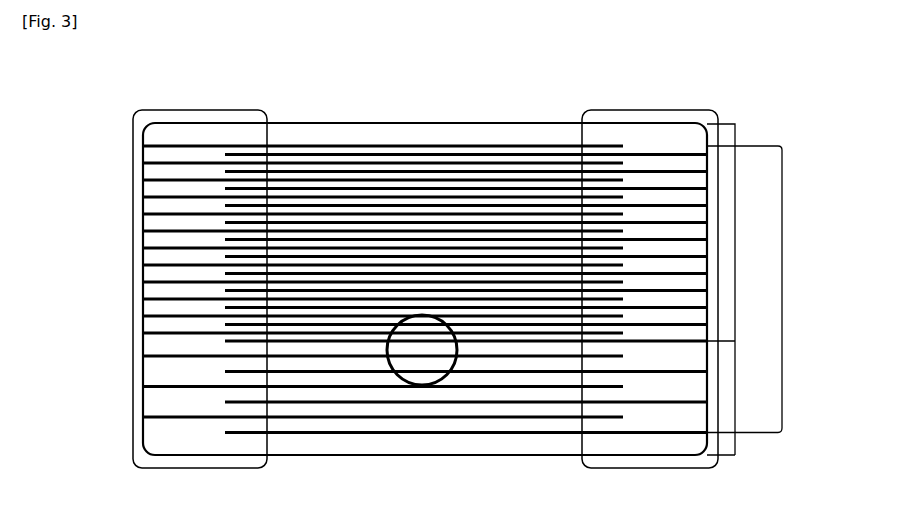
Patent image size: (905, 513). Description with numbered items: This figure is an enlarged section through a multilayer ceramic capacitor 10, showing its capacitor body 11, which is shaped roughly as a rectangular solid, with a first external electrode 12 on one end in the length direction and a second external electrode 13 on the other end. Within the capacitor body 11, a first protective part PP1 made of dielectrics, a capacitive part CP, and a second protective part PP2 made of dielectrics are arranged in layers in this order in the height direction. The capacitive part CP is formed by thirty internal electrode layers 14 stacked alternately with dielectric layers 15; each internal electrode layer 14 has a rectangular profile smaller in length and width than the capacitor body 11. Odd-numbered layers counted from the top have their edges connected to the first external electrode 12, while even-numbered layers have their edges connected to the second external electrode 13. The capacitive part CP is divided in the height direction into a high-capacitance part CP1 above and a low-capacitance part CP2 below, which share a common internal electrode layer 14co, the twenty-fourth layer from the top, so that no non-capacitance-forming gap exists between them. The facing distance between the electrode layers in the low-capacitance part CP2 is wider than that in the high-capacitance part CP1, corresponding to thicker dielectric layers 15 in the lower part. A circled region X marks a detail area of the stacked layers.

The multilayer ceramic capacitor 10 is at (132, 110).
The capacitor body 11 is at (405, 123).
The first external electrode 12 is at (195, 110).
The second external electrode 13 is at (650, 110).
The internal electrode layer 14 is at (300, 146).
The common internal electrode layer 14co is at (225, 341).
The dielectric layer 15 is at (341, 152).
The enlarged region X is at (395, 378).
The first protective part PP1 is at (735, 135).
The second protective part PP2 is at (735, 444).
The high-capacitance part CP1 is at (735, 240).
The low-capacitance part CP2 is at (735, 385).
The capacitive part CP is at (782, 290).